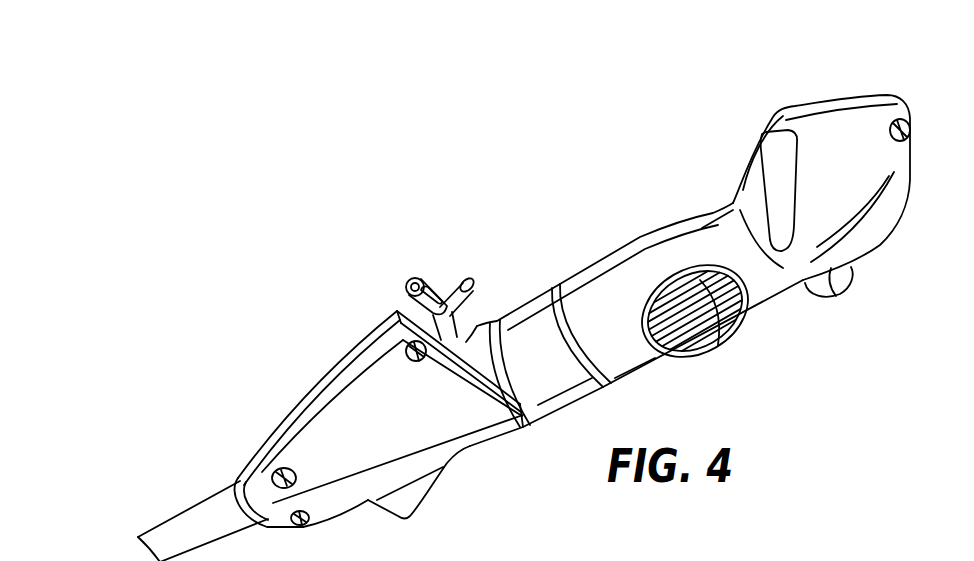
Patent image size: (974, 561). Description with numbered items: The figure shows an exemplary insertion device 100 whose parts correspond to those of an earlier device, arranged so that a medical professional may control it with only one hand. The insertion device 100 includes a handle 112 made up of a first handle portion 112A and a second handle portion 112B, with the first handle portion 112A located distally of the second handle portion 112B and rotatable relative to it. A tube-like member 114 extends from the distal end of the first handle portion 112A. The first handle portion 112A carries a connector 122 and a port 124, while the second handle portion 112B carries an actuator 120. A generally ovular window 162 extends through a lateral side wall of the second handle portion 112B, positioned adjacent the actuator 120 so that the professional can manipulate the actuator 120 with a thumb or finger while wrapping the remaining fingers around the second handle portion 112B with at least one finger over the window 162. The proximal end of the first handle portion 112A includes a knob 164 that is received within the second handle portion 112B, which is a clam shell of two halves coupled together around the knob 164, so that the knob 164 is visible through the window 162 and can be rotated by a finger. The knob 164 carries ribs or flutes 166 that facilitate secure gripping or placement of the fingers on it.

The insertion device 100 is at (343, 145).
The handle 112 is at (540, 175).
The first handle portion 112A is at (316, 392).
The second handle portion 112B is at (812, 103).
The shaft / tube 114 is at (185, 504).
The actuator 120 is at (858, 277).
The connector 122 is at (421, 506).
The port 124 is at (429, 262).
The window 162 is at (738, 267).
The knob 164 is at (677, 273).
The ribs or flutes 166 is at (702, 318).